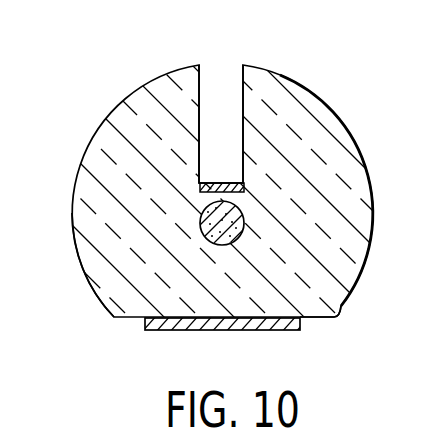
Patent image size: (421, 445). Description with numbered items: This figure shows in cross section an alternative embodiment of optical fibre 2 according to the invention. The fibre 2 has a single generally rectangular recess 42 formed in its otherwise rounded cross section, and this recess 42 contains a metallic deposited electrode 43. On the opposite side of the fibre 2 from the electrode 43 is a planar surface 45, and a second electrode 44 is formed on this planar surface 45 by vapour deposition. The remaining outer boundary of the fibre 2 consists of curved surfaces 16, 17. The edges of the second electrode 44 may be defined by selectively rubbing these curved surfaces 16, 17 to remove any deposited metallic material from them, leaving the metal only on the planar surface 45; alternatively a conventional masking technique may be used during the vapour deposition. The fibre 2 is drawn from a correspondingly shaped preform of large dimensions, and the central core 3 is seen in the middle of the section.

The fibre 2 is at (323, 133).
The optical fiber 3 is at (201, 215).
The curved surface 16 is at (372, 187).
The curved surface 17 is at (90, 276).
The rectangular recess 42 is at (242, 90).
The metallic deposited electrode 43 is at (223, 182).
The second electrode 44 is at (262, 332).
The planar surface 45 is at (322, 320).